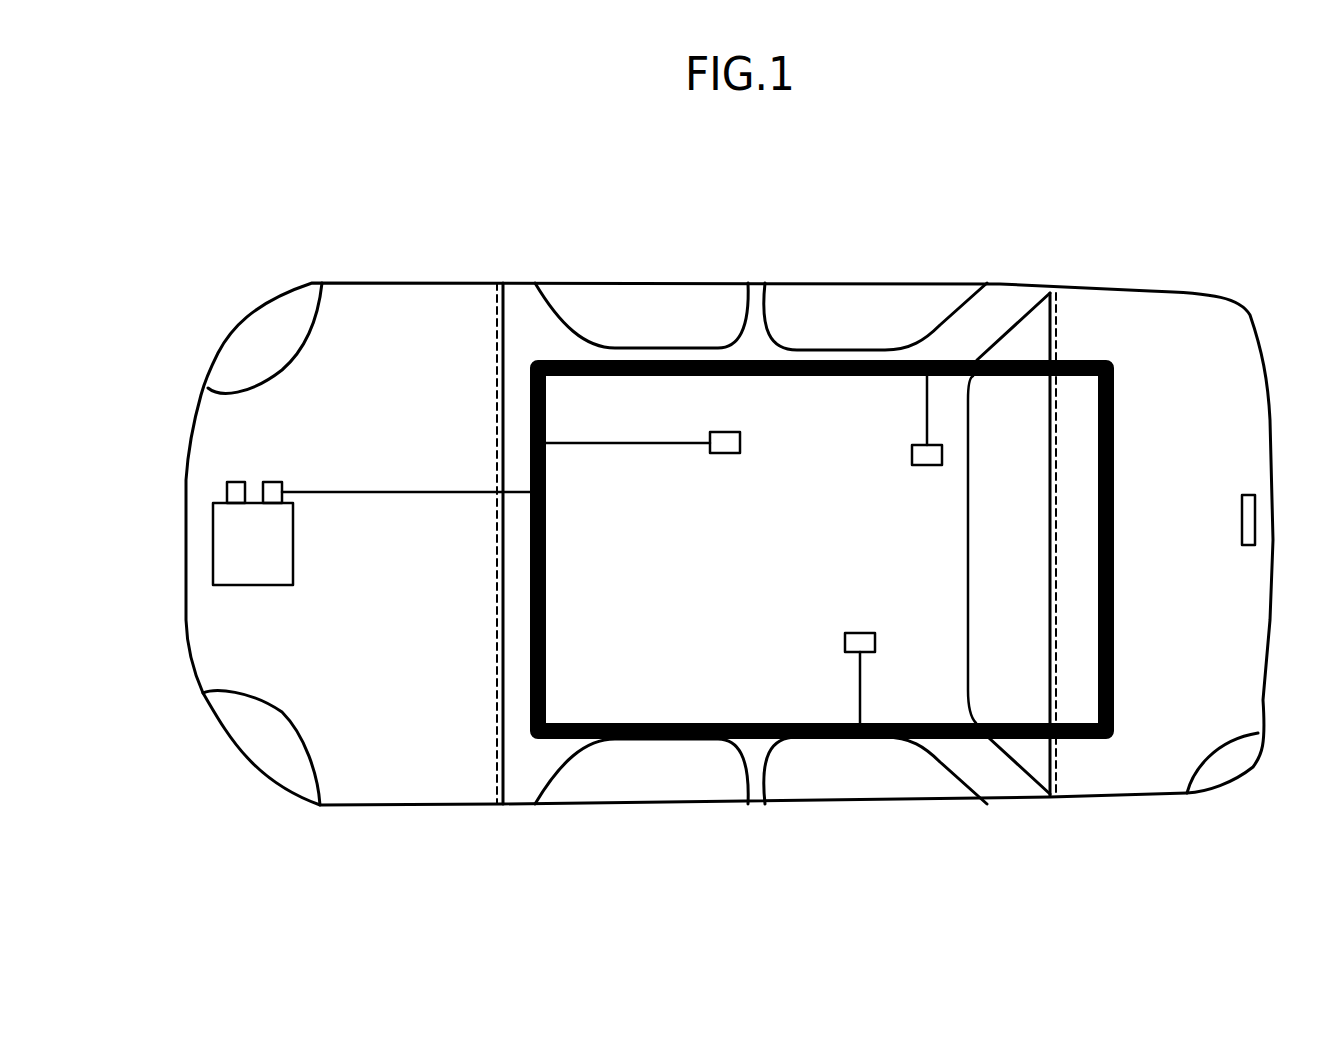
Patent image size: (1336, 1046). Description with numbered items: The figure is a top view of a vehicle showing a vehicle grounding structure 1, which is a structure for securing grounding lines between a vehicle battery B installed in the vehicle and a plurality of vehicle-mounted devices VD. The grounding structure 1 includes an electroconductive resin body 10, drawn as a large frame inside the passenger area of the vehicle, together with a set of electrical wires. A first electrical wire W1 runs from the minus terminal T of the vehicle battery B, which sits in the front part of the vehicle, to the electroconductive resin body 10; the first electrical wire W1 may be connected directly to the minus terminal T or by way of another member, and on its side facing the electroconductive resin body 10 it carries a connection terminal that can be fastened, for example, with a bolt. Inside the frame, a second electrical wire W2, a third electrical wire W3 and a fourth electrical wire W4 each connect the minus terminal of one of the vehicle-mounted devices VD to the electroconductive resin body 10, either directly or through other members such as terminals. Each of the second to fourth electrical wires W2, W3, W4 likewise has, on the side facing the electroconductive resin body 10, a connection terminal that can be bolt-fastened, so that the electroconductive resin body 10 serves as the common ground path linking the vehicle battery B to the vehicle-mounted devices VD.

The vehicle grounding structure 1 is at (1065, 258).
The electroconductive resin body 10 is at (1114, 592).
The vehicle battery B is at (213, 520).
The minus terminal T is at (270, 480).
The first electrical wire W1 is at (390, 492).
The second electrical wire W2 is at (685, 445).
The third electrical wire W3 is at (858, 692).
The fourth electrical wire W4 is at (928, 427).
The vehicle-mounted device VD is at (741, 440).